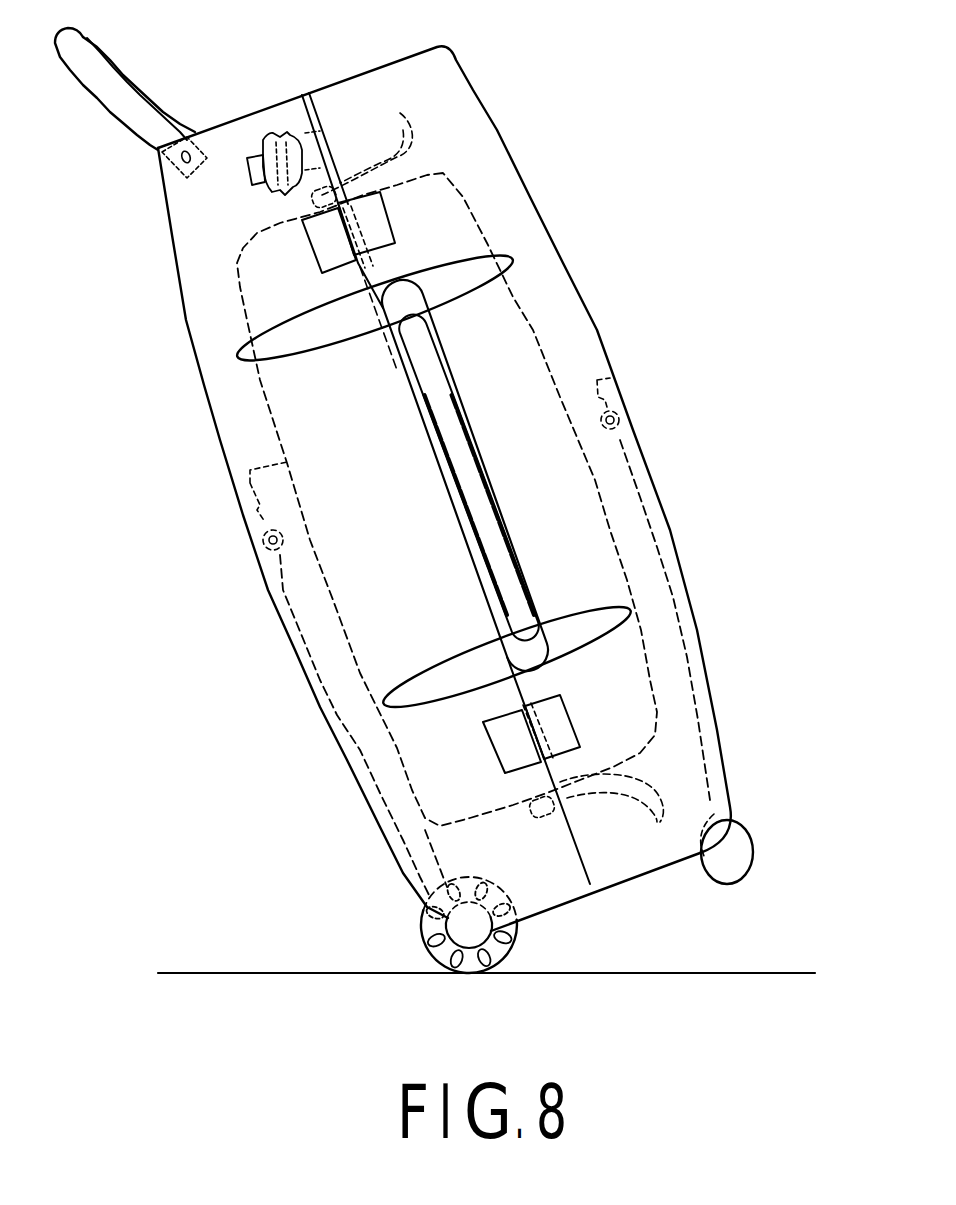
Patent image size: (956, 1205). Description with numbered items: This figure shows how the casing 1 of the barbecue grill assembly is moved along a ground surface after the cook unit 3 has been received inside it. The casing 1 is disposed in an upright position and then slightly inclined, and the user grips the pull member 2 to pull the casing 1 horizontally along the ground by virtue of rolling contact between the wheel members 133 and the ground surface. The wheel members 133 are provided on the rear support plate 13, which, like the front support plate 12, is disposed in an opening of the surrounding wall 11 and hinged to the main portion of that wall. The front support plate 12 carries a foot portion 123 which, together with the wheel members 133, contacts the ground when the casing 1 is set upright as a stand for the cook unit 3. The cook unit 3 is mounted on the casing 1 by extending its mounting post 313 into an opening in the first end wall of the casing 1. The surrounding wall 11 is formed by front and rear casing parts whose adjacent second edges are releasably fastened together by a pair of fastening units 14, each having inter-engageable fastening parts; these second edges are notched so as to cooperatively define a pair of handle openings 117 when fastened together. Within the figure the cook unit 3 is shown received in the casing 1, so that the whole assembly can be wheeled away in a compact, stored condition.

The casing 1 is at (419, 488).
The surrounding wall 11 is at (247, 430).
The handle openings 117 is at (273, 320).
The front support plate 12 is at (703, 697).
The foot portion 123 is at (740, 863).
The rear support plate 13 is at (383, 813).
The wheel members 133 is at (440, 938).
The fastening units 14 is at (330, 247).
The pull member 2 is at (122, 103).
The cook unit 3 is at (443, 173).
The mounting post 313 is at (280, 573).